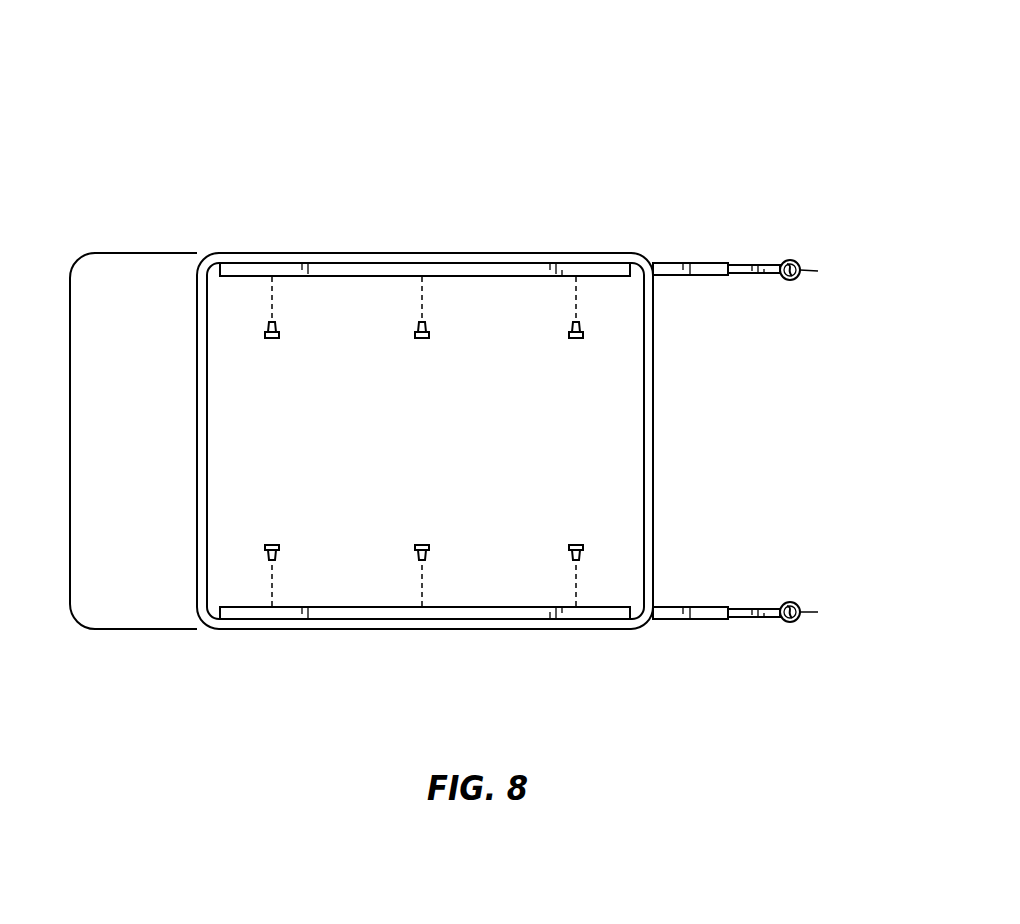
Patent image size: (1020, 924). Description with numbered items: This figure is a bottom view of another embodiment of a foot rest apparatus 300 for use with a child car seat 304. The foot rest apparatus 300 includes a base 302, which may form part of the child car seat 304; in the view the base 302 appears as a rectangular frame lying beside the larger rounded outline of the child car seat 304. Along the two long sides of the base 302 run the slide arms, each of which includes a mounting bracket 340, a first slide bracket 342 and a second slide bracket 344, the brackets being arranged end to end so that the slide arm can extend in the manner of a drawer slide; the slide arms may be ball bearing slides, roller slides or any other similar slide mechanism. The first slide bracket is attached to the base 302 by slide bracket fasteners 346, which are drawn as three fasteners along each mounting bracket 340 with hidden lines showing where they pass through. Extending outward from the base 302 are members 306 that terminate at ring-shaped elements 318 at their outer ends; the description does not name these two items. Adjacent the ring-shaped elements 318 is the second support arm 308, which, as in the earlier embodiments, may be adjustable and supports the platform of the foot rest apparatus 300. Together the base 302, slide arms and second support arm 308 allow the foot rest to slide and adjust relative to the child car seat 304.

The foot rest apparatus 300 is at (598, 88).
The base 302 is at (223, 580).
The child car seat 304 is at (90, 605).
The arm 306 is at (665, 264).
The second support arm 308 is at (800, 270).
The pivot bushing 318 is at (791, 260).
The mounting bracket 340 is at (312, 270).
The first slide bracket 342 is at (672, 615).
The second slide bracket 344 is at (747, 615).
The slide bracket fasteners 346 is at (270, 330).